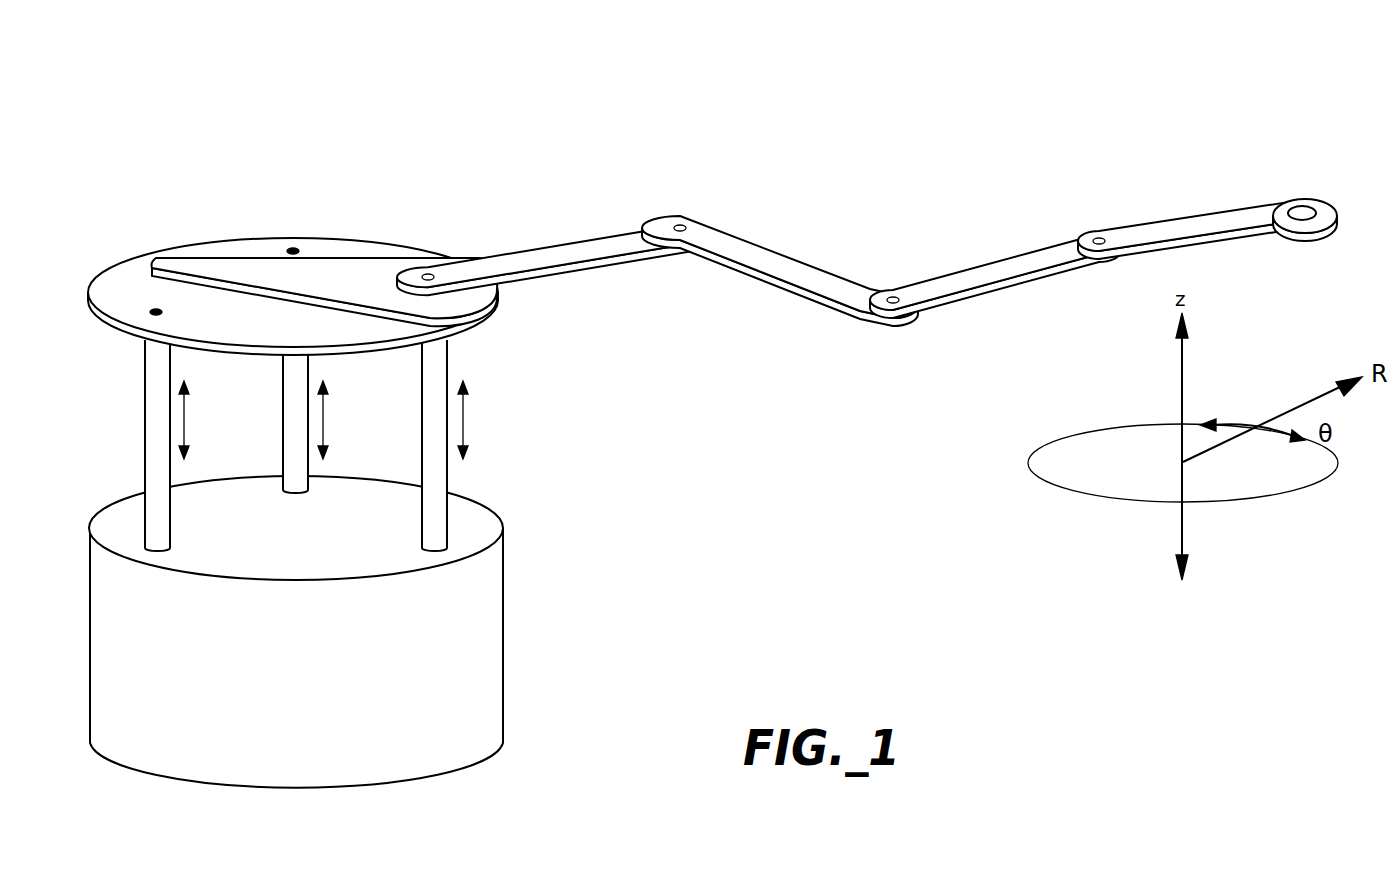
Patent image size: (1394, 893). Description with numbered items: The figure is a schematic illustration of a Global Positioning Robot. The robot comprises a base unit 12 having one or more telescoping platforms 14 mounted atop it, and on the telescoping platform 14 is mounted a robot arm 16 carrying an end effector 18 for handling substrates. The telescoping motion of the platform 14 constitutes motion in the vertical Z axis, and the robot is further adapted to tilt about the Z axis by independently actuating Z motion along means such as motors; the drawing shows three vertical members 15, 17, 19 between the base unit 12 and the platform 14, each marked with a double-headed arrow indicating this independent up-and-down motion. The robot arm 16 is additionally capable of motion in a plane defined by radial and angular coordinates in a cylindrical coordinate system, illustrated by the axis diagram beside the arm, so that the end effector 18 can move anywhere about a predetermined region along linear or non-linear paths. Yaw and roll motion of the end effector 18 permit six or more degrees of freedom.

The base unit 12 is at (157, 780).
The telescoping platform 14 is at (190, 247).
The first linear actuator rod 15 is at (144, 380).
The robot arm 16 is at (716, 216).
The second linear actuator rod 17 is at (284, 390).
The end effector 18 is at (1305, 199).
The third linear actuator rod 19 is at (421, 402).